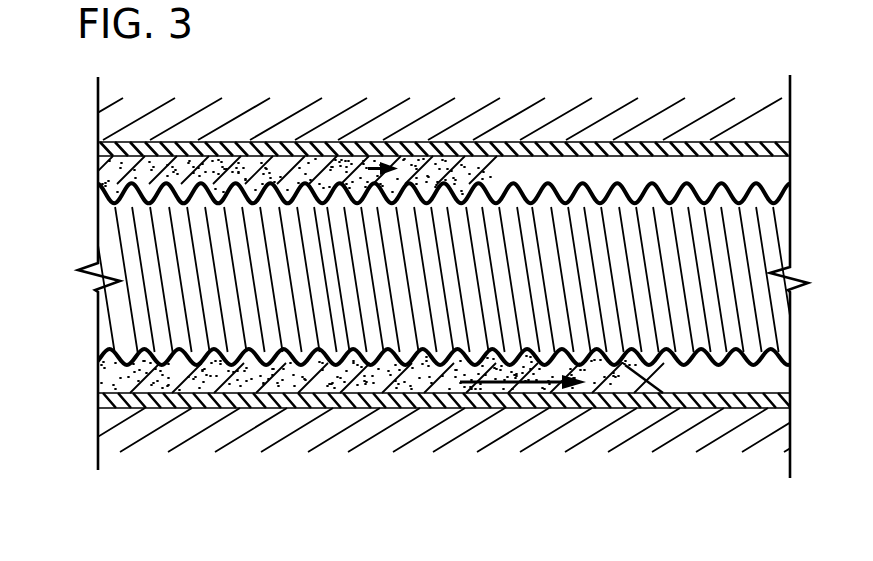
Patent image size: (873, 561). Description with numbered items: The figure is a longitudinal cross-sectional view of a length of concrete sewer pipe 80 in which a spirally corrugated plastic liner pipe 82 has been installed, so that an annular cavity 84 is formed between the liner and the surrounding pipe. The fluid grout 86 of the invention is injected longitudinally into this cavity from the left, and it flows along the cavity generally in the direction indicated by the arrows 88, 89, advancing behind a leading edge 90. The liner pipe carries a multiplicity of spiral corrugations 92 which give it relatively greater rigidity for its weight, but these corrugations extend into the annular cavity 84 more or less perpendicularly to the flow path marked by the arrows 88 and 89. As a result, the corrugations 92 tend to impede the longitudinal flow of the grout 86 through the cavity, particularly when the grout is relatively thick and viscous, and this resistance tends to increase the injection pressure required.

The sewer pipe 80 is at (178, 148).
The spirally corrugated liner pipe 82 is at (128, 240).
The annular cavity 84 is at (703, 168).
The fluid grout 86 is at (240, 170).
The arrow 88 is at (323, 165).
The arrow 89 is at (505, 386).
The leading edge 90 is at (503, 186).
The spiral corrugations 92 is at (680, 183).